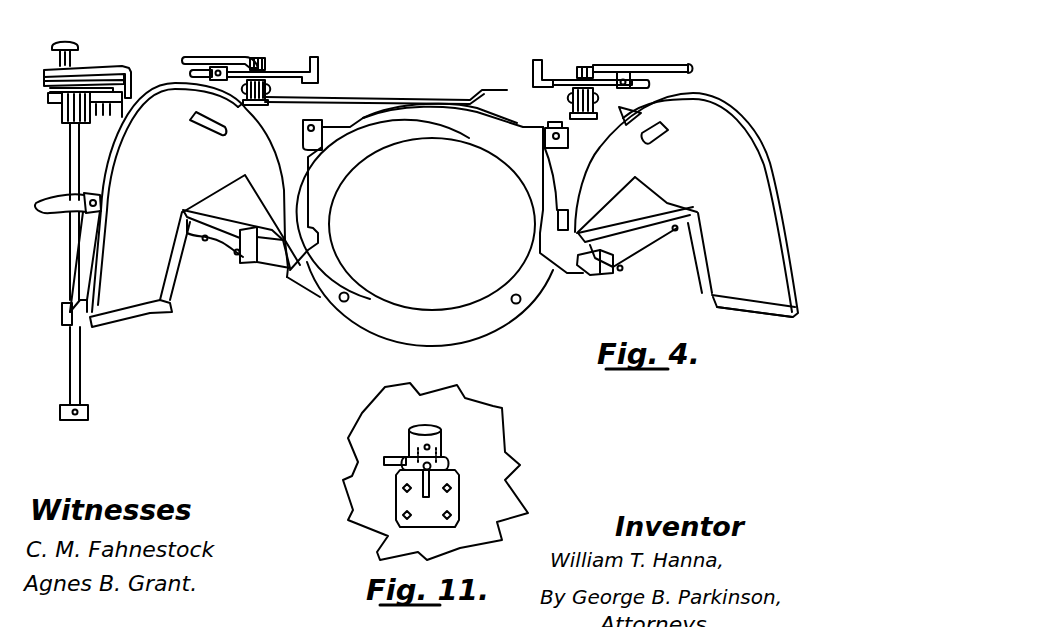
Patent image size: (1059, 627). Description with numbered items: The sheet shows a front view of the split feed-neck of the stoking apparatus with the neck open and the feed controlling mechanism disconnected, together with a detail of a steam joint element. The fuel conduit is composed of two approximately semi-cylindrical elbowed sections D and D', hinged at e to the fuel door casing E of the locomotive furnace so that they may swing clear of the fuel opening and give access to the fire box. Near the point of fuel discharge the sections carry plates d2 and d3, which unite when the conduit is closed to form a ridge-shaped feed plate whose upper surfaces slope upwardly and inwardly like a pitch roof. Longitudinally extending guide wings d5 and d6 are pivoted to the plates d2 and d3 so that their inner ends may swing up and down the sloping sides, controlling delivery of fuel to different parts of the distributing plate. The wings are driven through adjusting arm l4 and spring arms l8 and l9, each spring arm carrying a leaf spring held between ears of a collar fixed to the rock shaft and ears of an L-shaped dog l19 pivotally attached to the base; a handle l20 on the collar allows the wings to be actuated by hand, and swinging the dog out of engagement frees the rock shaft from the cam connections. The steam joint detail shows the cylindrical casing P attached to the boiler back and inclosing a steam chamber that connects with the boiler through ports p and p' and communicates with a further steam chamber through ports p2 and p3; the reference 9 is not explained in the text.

In FIG. 4, the adjusting arm l4 is at (82, 66).
In FIG. 4, the fuel conduit section D is at (190, 197).
In FIG. 4, the plate d2 is at (222, 237).
In FIG. 4, the guide wing d5 is at (286, 278).
In FIG. 4, the fuel door casing E is at (436, 225).
In FIG. 4, the hinge e is at (314, 122).
In FIG. 4, the spring arm l8 is at (283, 72).
In FIG. 4, the L-shaped dog l19 is at (205, 74).
In FIG. 4, the handle l20 is at (205, 58).
In FIG. 4, the spring arm l9 is at (557, 78).
In FIG. 4, the rod bracket 9 is at (554, 122).
In FIG. 4, the fuel conduit section D' is at (686, 194).
In FIG. 4, the plate d3 is at (644, 242).
In FIG. 4, the guide wing d6 is at (568, 272).
In FIG. 11, the port p2 is at (430, 446).
In FIG. 11, the port p3 is at (410, 452).
In FIG. 11, the port p' is at (443, 468).
In FIG. 11, the port p is at (386, 475).
In FIG. 11, the cylindrical casing P is at (445, 500).